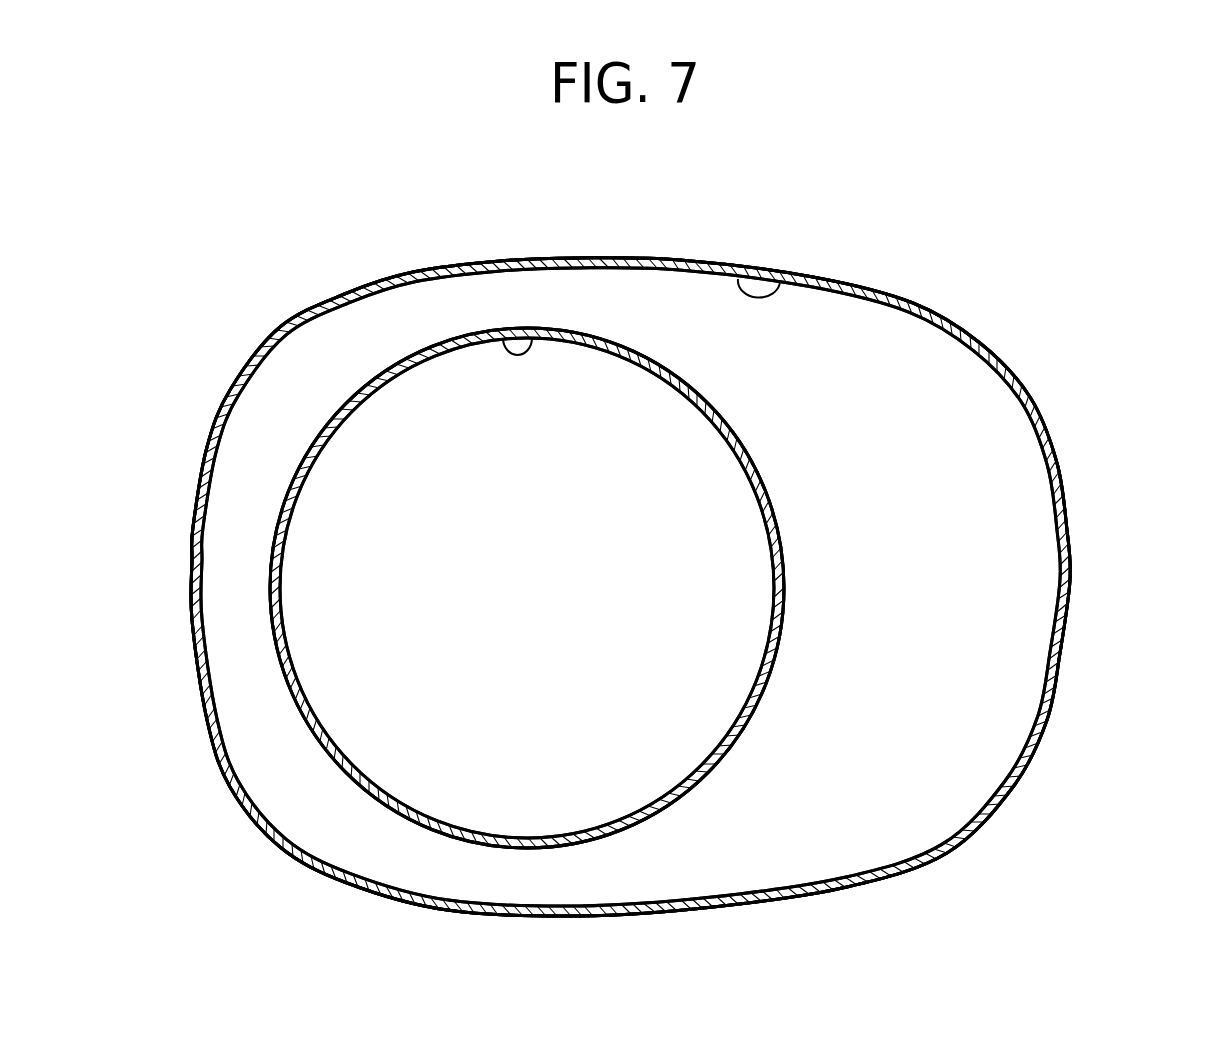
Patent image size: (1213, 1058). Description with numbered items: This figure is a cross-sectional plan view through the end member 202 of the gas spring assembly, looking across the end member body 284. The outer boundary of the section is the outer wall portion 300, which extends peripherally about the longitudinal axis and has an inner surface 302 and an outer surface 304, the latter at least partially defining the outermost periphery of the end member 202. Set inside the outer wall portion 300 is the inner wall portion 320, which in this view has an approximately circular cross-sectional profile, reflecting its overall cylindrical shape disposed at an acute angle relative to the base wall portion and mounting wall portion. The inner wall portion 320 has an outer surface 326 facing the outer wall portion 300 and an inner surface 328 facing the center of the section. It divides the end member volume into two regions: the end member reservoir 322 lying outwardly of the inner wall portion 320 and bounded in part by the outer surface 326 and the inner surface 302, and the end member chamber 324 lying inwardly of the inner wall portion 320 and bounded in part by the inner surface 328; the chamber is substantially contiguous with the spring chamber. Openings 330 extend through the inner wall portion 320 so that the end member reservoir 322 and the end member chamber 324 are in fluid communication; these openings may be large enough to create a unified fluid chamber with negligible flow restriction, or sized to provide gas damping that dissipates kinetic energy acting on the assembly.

The end member 202 is at (1084, 242).
The end member body 284 is at (1046, 384).
The outer wall portion 300 is at (853, 294).
The inner surface 302 is at (787, 274).
The outer surface 304 is at (893, 296).
The inner wall portion 320 is at (351, 399).
The end member reservoir 322 is at (1018, 527).
The end member chamber 324 is at (592, 374).
The outer surface 326 is at (462, 338).
The inner surface 328 is at (536, 338).
The openings 330 is at (276, 587).